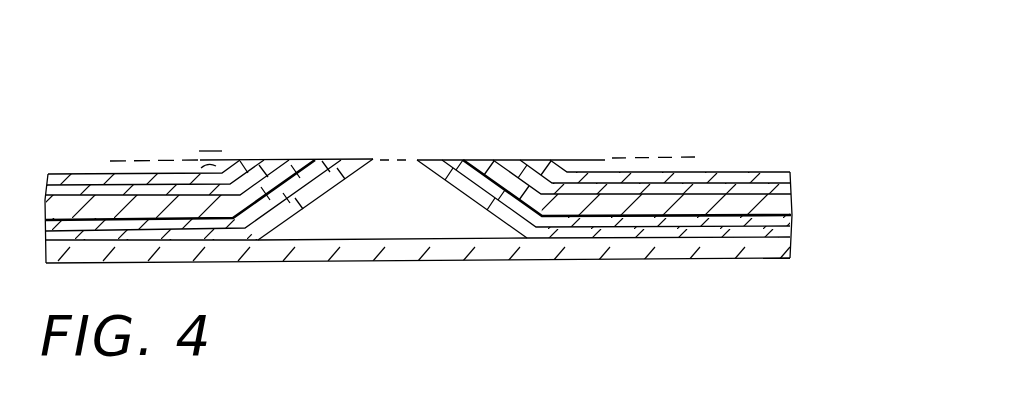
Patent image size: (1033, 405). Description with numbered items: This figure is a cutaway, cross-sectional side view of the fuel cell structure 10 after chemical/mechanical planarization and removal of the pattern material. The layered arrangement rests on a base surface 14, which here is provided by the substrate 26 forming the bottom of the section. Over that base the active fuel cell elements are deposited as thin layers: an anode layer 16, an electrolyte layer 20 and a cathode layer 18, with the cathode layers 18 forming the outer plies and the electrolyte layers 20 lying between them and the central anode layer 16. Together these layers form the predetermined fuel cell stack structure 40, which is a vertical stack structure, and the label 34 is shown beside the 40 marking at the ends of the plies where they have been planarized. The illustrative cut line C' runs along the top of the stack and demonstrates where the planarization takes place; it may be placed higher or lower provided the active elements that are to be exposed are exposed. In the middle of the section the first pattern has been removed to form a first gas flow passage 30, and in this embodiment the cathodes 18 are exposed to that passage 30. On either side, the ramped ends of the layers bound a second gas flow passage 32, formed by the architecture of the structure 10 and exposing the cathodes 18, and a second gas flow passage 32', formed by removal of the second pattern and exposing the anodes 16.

The fuel cell structure 10 is at (460, 195).
The base surface 14 is at (418, 280).
The anode layer 16 is at (792, 205).
The cathode layer 18 is at (791, 172).
The electrolyte layer 20 is at (792, 186).
The substrate 26 is at (538, 253).
The first gas flow passage 30 is at (410, 224).
The second gas flow passage 32 is at (571, 232).
The second gas flow passage 32' is at (306, 234).
The ply end 34 is at (332, 103).
The fuel cell stack structure 40 is at (482, 135).
The cut line C' is at (420, 114).